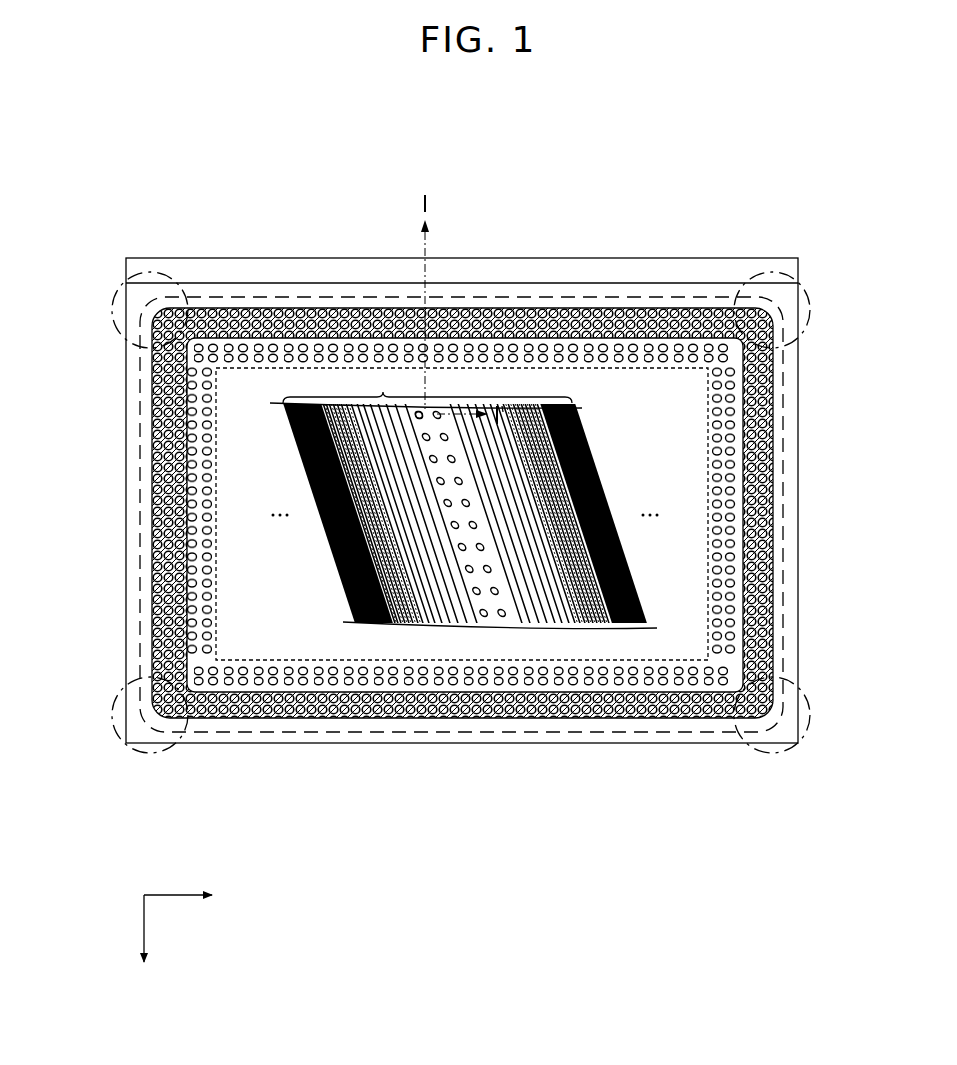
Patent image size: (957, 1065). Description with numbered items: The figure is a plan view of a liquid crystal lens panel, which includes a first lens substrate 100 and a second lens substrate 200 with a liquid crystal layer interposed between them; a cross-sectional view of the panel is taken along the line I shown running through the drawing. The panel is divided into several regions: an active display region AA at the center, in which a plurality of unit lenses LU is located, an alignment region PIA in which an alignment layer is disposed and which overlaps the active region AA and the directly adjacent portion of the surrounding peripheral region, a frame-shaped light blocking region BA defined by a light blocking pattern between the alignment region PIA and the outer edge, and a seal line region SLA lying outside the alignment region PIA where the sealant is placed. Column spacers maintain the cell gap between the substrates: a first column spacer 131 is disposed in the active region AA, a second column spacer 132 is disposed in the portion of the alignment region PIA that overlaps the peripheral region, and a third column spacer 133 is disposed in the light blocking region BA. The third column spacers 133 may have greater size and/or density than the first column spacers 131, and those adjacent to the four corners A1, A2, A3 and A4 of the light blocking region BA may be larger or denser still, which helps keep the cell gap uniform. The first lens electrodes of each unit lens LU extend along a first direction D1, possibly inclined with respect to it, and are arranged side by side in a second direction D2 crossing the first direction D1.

The first lens substrate 100 is at (711, 283).
The second lens substrate 200 is at (771, 258).
The first column spacer 131 is at (418, 411).
The second column spacer 132 is at (559, 350).
The third column spacer 133 is at (486, 313).
The seal line region SLA is at (357, 729).
The light blocking region BA is at (425, 712).
The alignment region PIA is at (513, 676).
The active display region AA is at (614, 646).
The unit lens LU is at (427, 389).
The line I-I' I is at (462, 309).
The first corner A1 is at (118, 303).
The second corner A2 is at (810, 303).
The third corner A3 is at (118, 725).
The fourth corner A4 is at (812, 724).
The first direction D1 is at (142, 944).
The second direction D2 is at (195, 895).